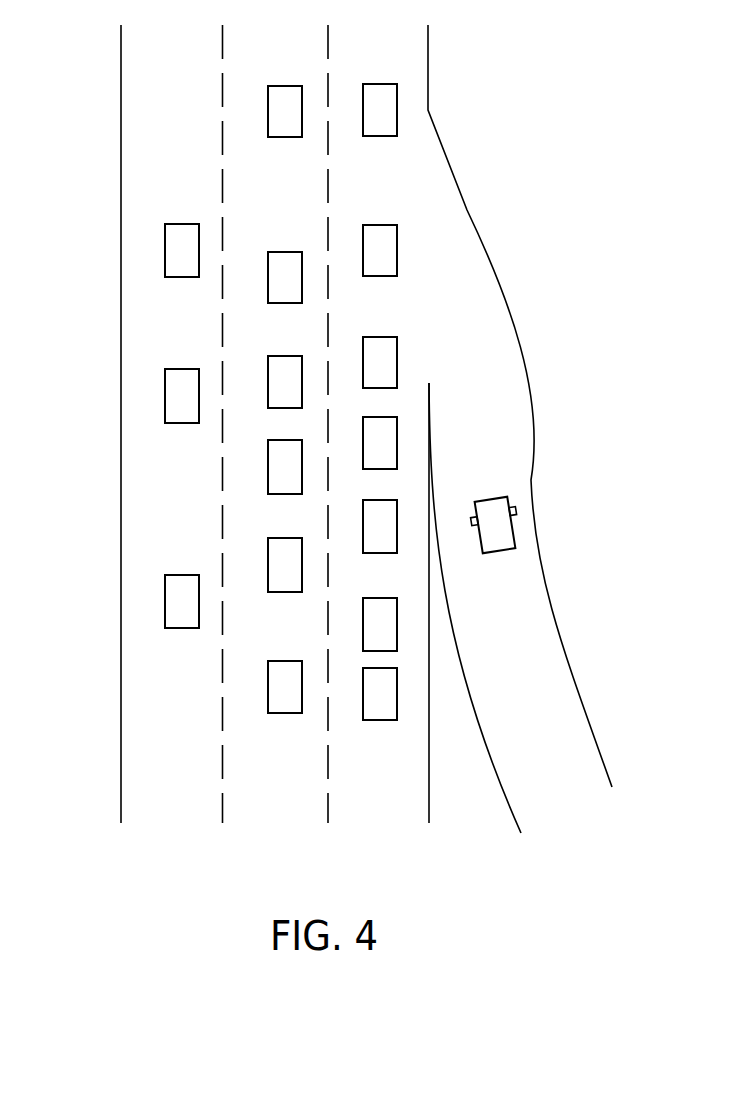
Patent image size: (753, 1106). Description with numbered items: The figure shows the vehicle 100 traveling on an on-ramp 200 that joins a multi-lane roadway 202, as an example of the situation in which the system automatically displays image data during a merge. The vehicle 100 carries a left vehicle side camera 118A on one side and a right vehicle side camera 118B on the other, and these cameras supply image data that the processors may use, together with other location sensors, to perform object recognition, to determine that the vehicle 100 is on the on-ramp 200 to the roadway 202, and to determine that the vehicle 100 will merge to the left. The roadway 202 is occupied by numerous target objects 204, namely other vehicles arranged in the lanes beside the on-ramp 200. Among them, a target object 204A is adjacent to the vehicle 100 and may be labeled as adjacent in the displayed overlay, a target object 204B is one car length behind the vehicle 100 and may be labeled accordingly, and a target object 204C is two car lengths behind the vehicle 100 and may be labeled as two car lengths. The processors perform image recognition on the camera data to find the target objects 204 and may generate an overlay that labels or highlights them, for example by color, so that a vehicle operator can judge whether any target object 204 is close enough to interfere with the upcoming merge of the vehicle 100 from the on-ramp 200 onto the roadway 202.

The vehicle 100 is at (516, 527).
The left vehicle side camera 118A is at (471, 521).
The right vehicle side camera 118B is at (519, 512).
The on-ramp 200 is at (567, 730).
The roadway 202 is at (131, 523).
The target object 204 is at (165, 248).
The target object 204A is at (398, 446).
The target object 204B is at (398, 505).
The target object 204C is at (398, 622).